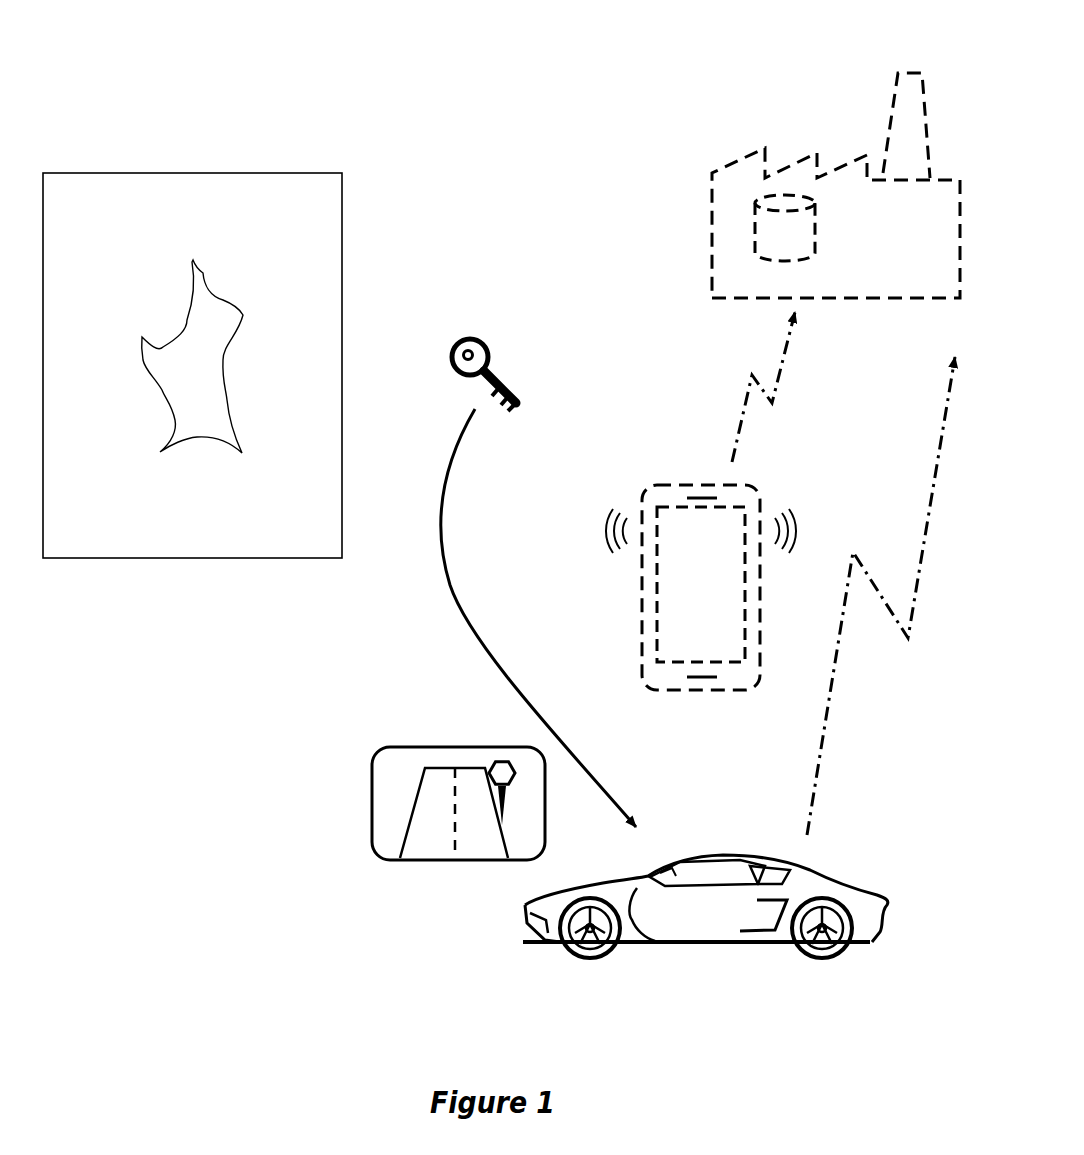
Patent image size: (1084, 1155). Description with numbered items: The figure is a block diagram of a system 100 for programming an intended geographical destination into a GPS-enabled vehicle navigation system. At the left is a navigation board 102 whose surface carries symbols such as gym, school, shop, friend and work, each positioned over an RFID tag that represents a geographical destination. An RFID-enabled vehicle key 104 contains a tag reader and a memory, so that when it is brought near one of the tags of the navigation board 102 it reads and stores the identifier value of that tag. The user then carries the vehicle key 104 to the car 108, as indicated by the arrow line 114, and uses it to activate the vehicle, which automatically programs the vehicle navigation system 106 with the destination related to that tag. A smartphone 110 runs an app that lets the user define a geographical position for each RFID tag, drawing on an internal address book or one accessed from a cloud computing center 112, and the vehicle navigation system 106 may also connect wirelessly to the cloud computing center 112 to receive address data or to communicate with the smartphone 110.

The system 100 is at (147, 80).
The navigation board 102 is at (182, 570).
The vehicle key 104 is at (503, 330).
The vehicle navigation system 106 is at (357, 802).
The car 108 is at (872, 878).
The smartphone 110 is at (727, 587).
The cloud computing center 112 is at (902, 239).
The arrow line 114 is at (424, 603).